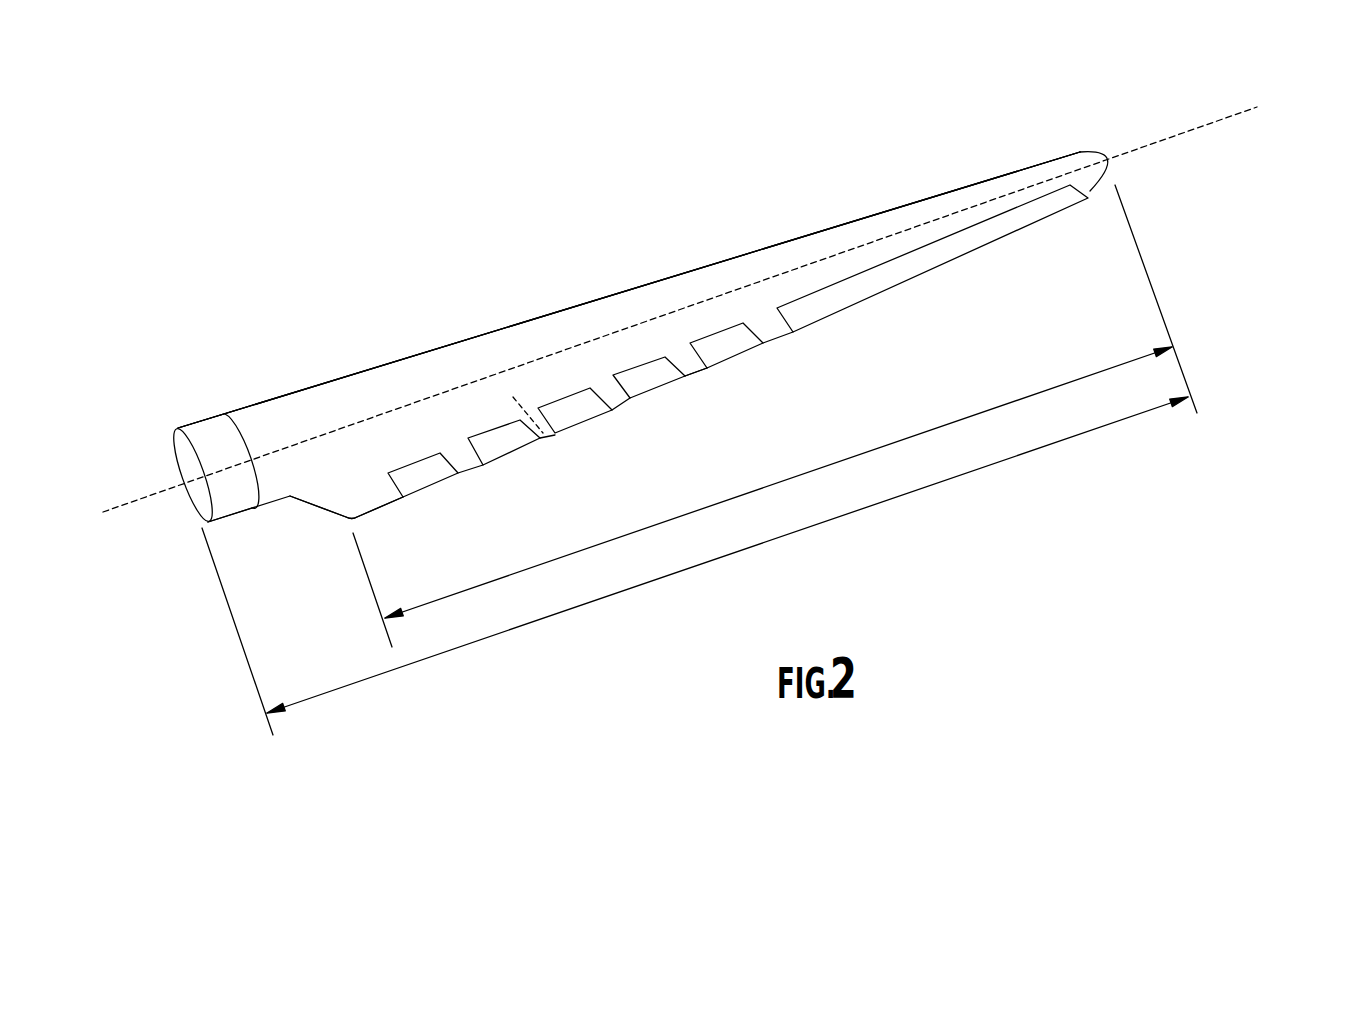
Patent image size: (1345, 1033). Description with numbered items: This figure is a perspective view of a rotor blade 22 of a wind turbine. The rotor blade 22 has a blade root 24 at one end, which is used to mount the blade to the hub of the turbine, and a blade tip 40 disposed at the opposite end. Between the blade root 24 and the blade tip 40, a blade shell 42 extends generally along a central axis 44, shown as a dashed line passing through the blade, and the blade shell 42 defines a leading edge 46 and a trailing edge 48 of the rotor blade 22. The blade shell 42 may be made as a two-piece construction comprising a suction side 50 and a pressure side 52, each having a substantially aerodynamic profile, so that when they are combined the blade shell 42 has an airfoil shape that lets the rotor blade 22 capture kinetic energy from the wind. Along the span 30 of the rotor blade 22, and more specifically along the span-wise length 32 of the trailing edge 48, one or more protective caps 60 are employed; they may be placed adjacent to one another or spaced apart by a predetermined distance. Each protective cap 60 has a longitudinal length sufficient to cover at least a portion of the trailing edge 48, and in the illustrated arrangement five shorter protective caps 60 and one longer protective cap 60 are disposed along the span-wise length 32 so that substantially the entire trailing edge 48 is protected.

The rotor blade 22 is at (399, 228).
The blade root 24 is at (205, 423).
The span 30 is at (873, 503).
The span-wise length 32 is at (765, 490).
The blade tip 40 is at (1107, 158).
The blade shell 42 is at (293, 428).
The central axis 44 is at (1235, 117).
The leading edge 46 is at (453, 345).
The trailing edge 48 is at (697, 368).
The suction side 50 is at (545, 437).
The pressure side 52 is at (453, 445).
The protective cap 60 is at (643, 383).